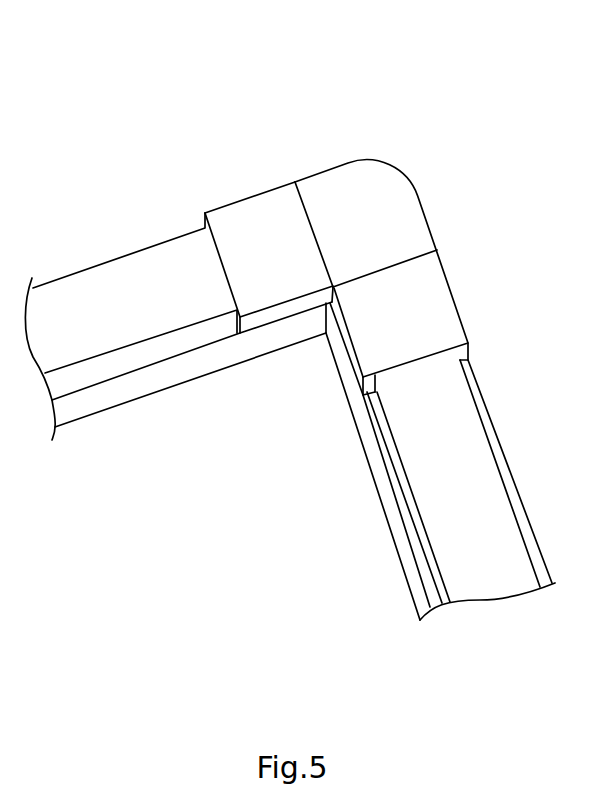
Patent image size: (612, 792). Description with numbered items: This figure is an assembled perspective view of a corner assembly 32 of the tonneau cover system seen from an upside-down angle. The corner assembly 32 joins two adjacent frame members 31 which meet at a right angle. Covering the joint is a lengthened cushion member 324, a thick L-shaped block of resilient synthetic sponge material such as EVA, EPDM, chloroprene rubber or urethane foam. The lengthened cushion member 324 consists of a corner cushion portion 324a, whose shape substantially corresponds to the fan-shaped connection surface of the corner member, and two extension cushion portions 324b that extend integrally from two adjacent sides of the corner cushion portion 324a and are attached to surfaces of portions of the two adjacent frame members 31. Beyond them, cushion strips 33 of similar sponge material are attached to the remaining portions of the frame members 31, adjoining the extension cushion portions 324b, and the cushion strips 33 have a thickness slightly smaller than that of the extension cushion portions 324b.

The frame member 31 is at (147, 387).
The corner assembly 32 is at (399, 153).
The cushion strip 33 is at (123, 267).
The lengthened cushion member 324 is at (303, 195).
The corner cushion portion 324a is at (323, 180).
The extension cushion portion 324b is at (267, 210).